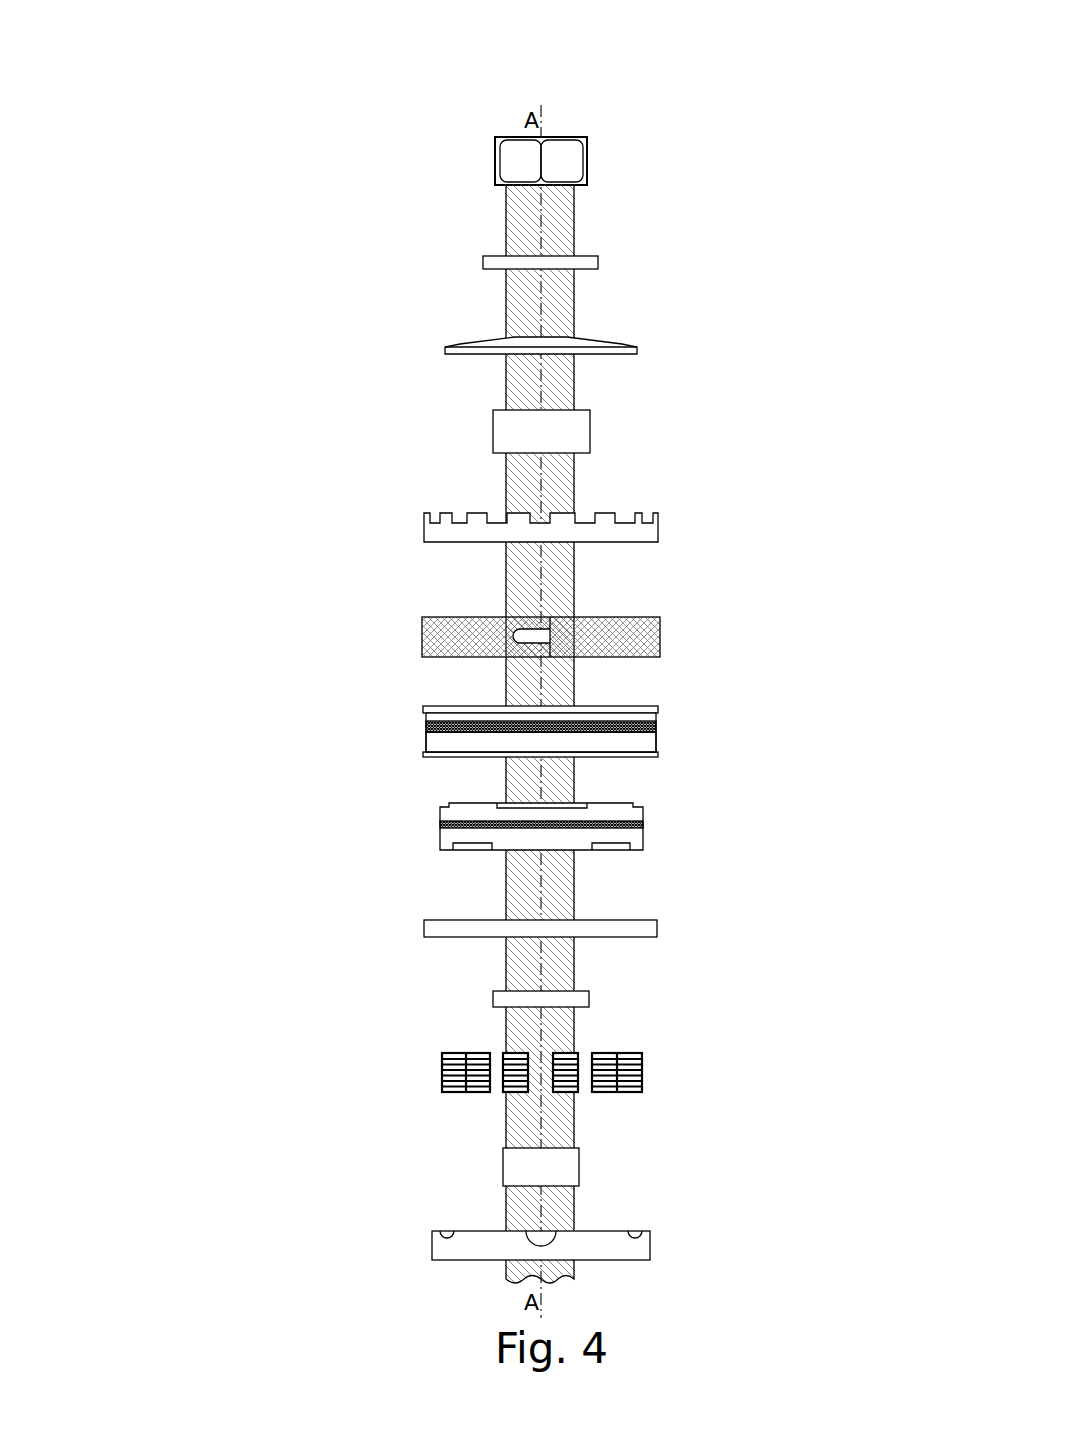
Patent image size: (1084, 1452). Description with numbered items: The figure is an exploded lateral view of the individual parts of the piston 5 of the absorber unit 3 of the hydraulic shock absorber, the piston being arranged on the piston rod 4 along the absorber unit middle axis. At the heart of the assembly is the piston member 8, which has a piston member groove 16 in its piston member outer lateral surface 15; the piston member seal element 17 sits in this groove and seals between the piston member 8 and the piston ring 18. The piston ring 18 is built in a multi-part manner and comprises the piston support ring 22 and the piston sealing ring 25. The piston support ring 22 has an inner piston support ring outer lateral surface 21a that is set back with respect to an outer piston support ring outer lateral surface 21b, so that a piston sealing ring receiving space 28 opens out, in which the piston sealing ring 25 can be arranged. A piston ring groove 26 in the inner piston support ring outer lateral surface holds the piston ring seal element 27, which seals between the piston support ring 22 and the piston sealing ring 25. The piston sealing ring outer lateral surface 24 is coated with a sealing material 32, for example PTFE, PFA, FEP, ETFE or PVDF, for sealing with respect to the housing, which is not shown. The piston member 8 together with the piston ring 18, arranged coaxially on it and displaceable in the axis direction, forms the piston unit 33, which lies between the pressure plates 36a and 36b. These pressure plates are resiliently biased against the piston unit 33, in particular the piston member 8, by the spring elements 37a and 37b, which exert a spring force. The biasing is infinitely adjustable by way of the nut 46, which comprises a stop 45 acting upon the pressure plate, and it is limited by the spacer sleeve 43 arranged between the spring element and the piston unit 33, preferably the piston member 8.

The absorber unit 3 is at (135, 30).
The piston rod 4 is at (579, 222).
The piston 5 is at (128, 230).
The piston member 8 is at (586, 830).
The piston member outer lateral surface 15 is at (648, 813).
The piston member groove 16 is at (437, 822).
The piston member seal element 17 is at (440, 827).
The piston ring 18 is at (568, 684).
The inner piston support ring outer lateral surface 21a is at (420, 738).
The outer piston support ring outer lateral surface 21b is at (420, 708).
The piston support ring 22 is at (674, 737).
The piston sealing ring outer lateral surface 24 is at (516, 607).
The piston sealing ring 25 is at (674, 633).
The piston ring groove 26 is at (420, 724).
The piston ring seal element 27 is at (675, 726).
The piston sealing ring receiving space 28 is at (557, 684).
The sealing material 32 is at (435, 628).
The piston unit 33 is at (178, 673).
The pressure plate 36a is at (660, 535).
The pressure plate 36b is at (657, 930).
The spring element 37a is at (656, 347).
The spring element 37b is at (723, 1122).
The spacer sleeve 43 is at (507, 432).
The stop 45 is at (500, 190).
The nut 46 is at (510, 162).